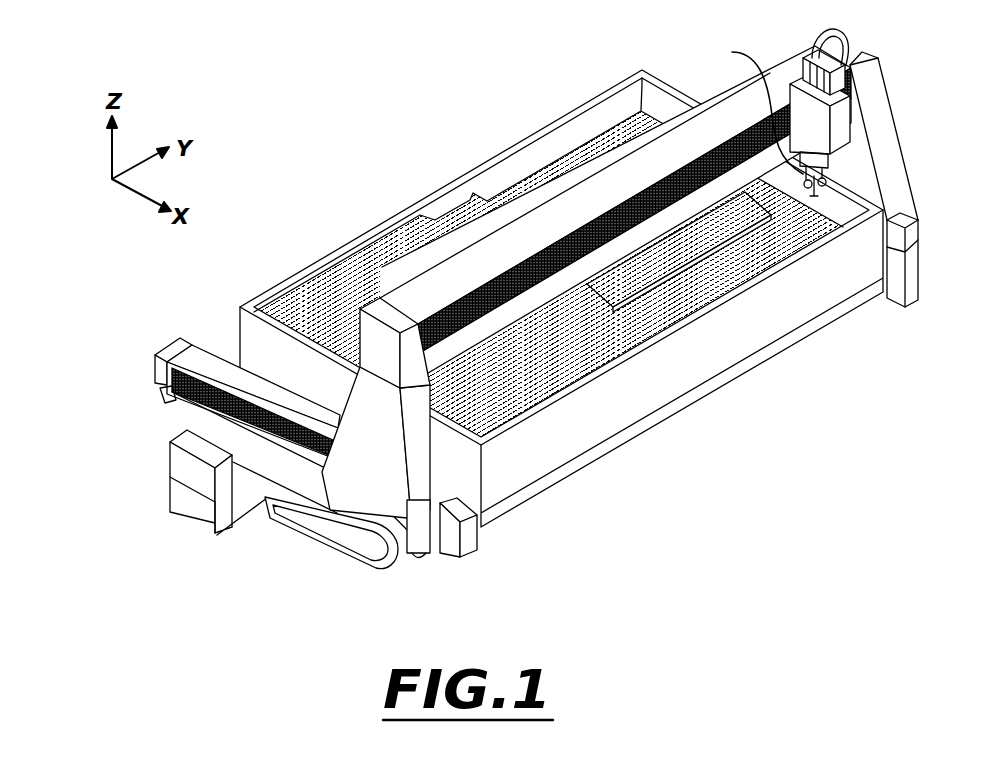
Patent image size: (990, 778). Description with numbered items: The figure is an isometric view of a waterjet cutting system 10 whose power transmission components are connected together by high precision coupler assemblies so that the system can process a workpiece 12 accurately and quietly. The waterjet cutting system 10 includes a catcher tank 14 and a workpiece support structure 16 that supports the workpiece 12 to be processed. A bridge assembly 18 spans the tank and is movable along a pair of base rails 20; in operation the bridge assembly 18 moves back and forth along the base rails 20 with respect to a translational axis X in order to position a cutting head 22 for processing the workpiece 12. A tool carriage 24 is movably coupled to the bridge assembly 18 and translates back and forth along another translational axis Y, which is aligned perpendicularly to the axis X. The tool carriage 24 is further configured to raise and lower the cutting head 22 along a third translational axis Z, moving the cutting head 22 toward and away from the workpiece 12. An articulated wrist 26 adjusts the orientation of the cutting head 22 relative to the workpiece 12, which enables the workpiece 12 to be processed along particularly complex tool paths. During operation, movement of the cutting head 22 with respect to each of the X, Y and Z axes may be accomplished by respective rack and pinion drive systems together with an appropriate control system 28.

The waterjet cutting system 10 is at (565, 287).
The workpiece 12 is at (657, 257).
The catcher tank 14 is at (538, 466).
The workpiece support structure 16 is at (577, 350).
The bridge assembly 18 is at (893, 153).
The base rails 20 is at (913, 283).
The cutting head 22 is at (829, 197).
The tool carriage 24 is at (837, 115).
The articulated wrist 26 is at (732, 52).
The control system 28 is at (222, 517).